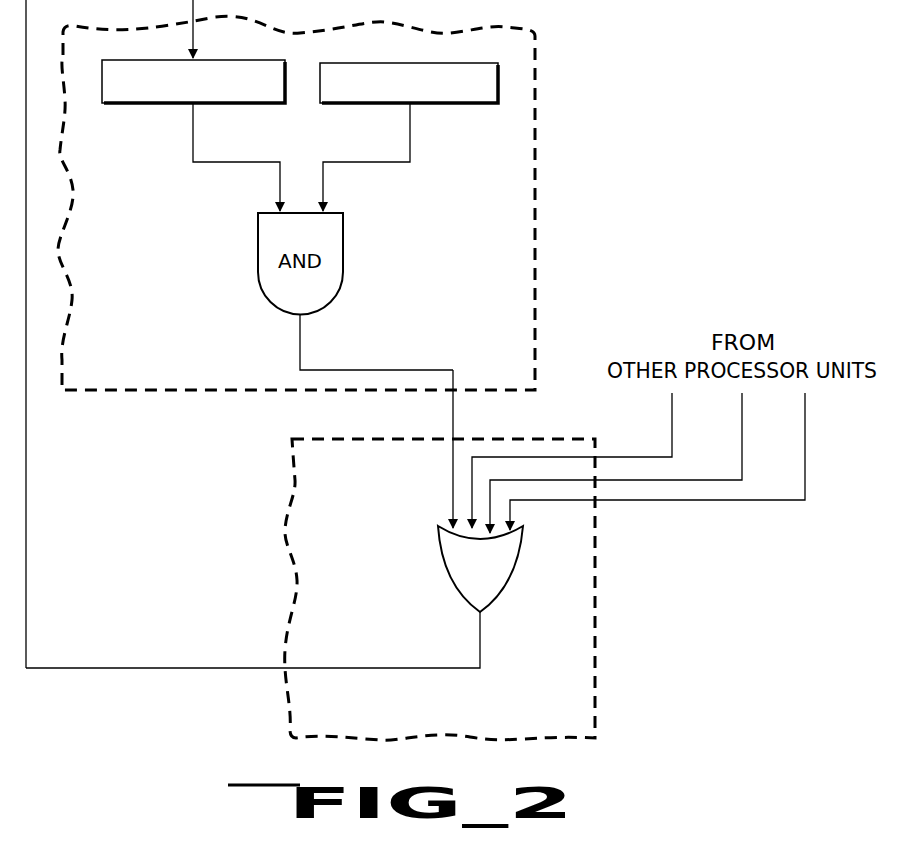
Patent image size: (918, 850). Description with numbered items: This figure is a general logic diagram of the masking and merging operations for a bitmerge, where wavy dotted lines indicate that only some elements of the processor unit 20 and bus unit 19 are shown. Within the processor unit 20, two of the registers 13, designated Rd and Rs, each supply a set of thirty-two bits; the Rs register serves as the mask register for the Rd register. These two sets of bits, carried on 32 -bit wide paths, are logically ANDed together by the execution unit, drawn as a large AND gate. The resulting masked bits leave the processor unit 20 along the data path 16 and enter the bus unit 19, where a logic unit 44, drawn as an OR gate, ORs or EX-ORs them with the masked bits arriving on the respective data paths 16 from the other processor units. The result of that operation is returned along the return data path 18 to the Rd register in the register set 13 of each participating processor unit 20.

The registers 13 is at (268, 104).
The data path 16 is at (453, 413).
The return data path 18 is at (26, 525).
The bus unit 19 is at (513, 714).
The processor unit 20 is at (432, 299).
The 32-bit 32 is at (183, 142).
The logic unit 44 is at (514, 580).